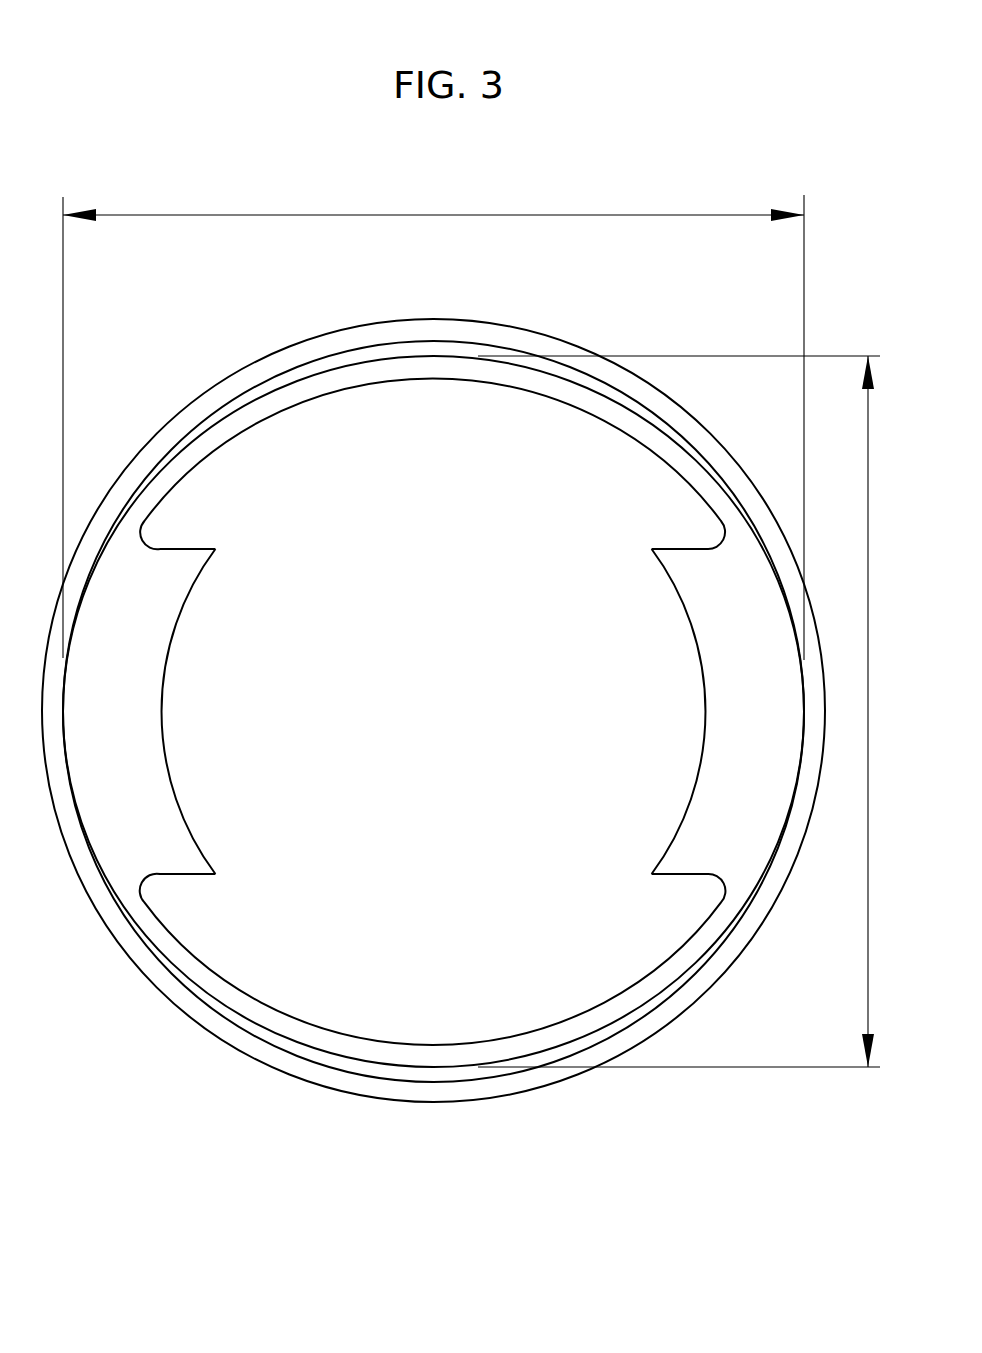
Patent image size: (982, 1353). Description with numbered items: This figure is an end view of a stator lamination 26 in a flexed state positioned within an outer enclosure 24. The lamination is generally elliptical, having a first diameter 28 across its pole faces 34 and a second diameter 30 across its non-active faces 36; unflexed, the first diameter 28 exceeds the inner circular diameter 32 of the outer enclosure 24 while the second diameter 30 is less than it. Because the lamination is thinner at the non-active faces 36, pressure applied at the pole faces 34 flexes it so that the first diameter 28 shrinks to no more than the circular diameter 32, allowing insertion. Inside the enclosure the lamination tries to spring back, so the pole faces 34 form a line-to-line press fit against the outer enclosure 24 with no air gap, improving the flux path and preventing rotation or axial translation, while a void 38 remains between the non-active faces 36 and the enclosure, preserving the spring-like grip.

The outer enclosure 24 is at (232, 1049).
The stator lamination 26 is at (231, 982).
The first diameter 28 is at (231, 215).
The second diameter 30 is at (868, 893).
The inner circular diameter 32 is at (433, 616).
The pole faces 34 is at (178, 622).
The non-active faces 36 is at (522, 1034).
The void 38 is at (424, 1092).